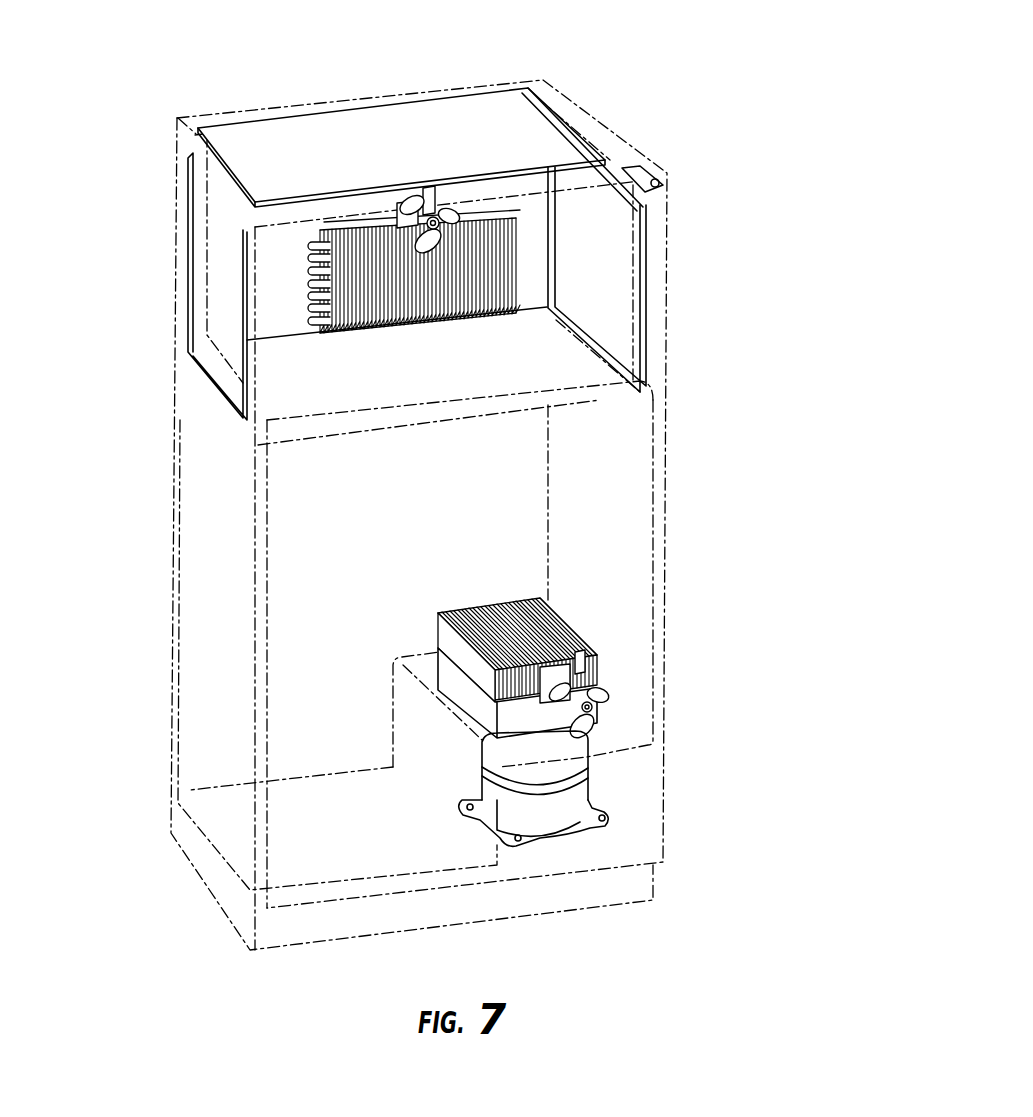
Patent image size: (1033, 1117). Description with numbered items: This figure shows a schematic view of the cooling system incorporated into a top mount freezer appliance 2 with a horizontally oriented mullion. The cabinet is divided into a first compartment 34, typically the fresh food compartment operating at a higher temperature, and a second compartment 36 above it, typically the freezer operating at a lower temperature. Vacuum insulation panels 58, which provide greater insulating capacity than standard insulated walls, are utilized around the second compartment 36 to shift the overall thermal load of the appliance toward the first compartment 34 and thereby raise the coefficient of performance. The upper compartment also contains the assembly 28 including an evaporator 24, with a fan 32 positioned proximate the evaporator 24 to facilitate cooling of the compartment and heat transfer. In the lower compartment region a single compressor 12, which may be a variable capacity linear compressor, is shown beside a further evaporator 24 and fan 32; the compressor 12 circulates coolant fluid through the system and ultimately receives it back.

The appliance 2 is at (113, 184).
The compressor 12 is at (567, 800).
The evaporator 24 is at (341, 238).
The upper frame assembly 28 is at (450, 227).
The fan 32 is at (430, 192).
The first compartment 34 is at (366, 553).
The second compartment 36 is at (541, 359).
The vacuum insulation panel 58 is at (517, 137).